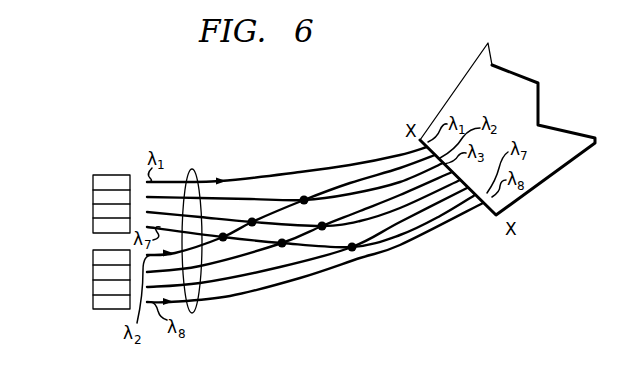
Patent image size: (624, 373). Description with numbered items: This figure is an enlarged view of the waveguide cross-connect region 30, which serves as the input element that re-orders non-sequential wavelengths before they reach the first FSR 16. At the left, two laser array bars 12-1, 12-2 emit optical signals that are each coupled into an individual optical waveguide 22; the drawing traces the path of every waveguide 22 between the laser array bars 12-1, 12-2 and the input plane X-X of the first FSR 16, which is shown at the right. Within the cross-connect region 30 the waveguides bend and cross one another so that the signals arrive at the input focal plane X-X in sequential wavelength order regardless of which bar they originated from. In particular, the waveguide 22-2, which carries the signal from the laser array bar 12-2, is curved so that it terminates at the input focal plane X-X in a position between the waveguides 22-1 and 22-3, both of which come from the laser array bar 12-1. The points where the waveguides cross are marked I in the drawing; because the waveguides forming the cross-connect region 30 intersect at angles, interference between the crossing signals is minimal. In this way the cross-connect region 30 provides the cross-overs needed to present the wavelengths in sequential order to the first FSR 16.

The laser array bar 12-1 is at (93, 201).
The laser array bar 12-2 is at (93, 279).
The first FSR 16 is at (476, 83).
The optical waveguide 22 is at (190, 169).
The waveguide 22-1 is at (236, 180).
The waveguide 22-2 is at (213, 245).
The waveguide 22-3 is at (270, 198).
The waveguide cross-connect region 30 is at (483, 226).
The beam intersection point I is at (304, 198).